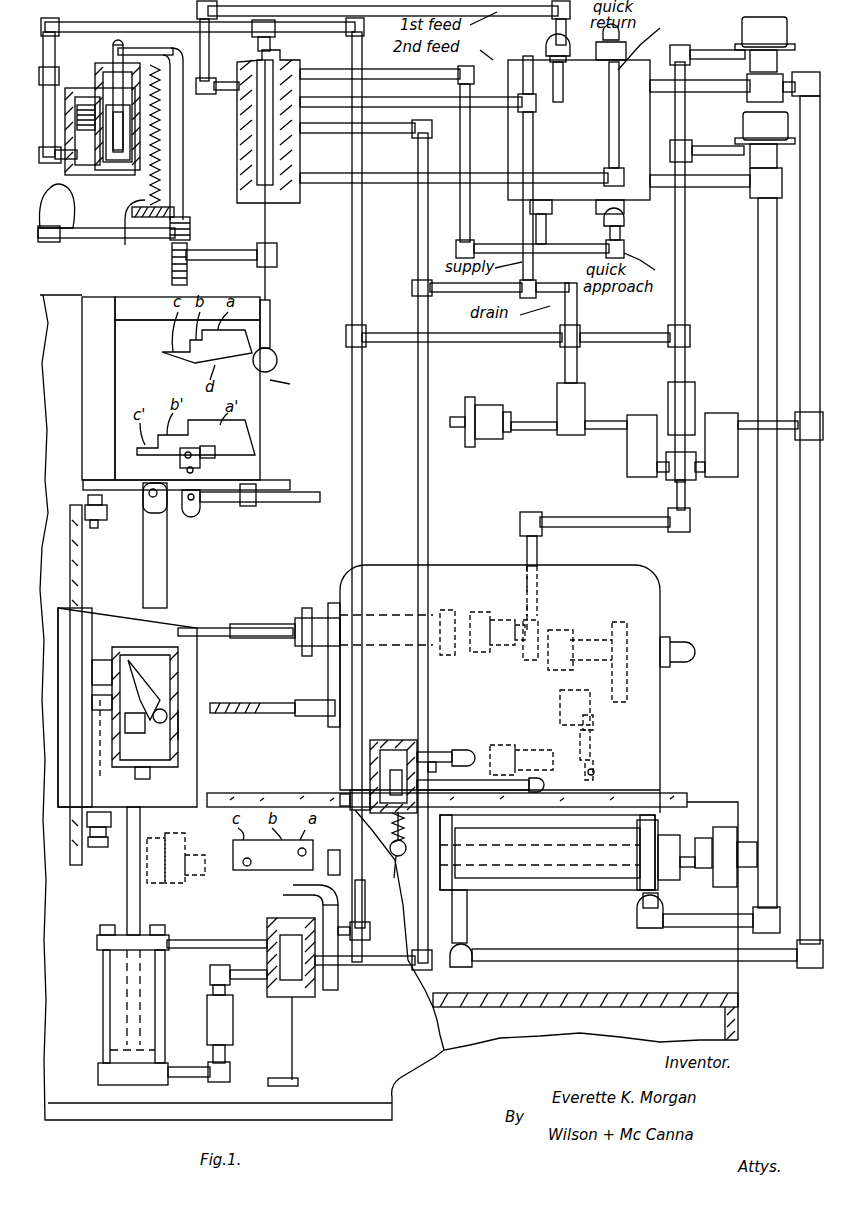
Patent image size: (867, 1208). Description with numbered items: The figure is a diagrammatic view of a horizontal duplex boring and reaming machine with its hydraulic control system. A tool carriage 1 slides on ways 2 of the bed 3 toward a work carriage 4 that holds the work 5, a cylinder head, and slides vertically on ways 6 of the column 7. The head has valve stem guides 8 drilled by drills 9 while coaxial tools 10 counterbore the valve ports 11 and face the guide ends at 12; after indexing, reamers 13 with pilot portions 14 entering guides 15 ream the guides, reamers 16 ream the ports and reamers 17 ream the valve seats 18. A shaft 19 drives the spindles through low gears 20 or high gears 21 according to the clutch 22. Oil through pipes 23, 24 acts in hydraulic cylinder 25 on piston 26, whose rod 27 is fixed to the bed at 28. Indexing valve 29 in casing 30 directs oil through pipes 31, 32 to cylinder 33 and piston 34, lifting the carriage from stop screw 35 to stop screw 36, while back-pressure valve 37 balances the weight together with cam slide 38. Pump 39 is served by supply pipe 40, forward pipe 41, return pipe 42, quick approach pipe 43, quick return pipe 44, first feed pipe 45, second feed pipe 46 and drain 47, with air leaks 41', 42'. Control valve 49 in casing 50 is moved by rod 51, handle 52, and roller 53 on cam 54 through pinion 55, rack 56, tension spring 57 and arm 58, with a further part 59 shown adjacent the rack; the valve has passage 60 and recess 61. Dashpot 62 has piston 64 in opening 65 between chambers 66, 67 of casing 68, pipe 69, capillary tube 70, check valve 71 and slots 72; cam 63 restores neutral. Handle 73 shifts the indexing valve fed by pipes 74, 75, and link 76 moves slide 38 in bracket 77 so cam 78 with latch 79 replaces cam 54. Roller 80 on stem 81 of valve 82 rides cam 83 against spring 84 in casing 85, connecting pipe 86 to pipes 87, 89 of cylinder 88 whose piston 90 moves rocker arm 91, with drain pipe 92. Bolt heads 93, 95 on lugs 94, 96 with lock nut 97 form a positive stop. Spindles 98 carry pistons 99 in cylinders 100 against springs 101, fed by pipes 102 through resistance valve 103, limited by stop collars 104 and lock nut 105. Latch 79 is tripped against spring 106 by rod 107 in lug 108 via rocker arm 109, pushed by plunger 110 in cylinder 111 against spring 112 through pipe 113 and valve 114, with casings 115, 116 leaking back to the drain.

The tool carriage 1 is at (655, 760).
The ways 2 is at (685, 792).
The bed 3 is at (740, 1000).
The work carriage 4 is at (185, 780).
The work 5 is at (180, 688).
The ways 6 is at (80, 595).
The column 7 is at (389, 707).
The valve stem guides 8 is at (135, 733).
The drills 9 is at (235, 707).
The tools 10 is at (262, 703).
The valve ports 11 is at (156, 731).
The end of valve stem guides 12 is at (130, 688).
The reamers 13 is at (245, 624).
The pilot portions 14 is at (203, 628).
The guides 15 is at (106, 744).
The reamers 16 is at (292, 618).
The reamers 17 is at (302, 656).
The valve seats 18 is at (178, 715).
The shaft 19 is at (678, 640).
The low gears 20 is at (555, 630).
The high gears 21 is at (625, 622).
The clutch 22 is at (595, 700).
The pipe 23 is at (803, 637).
The pipe 24 is at (765, 685).
The hydraulic cylinder 25 is at (540, 888).
The piston 26 is at (488, 890).
The piston rod 27 is at (683, 850).
The rod anchorage 28 is at (722, 875).
The valve 29 is at (265, 968).
The valve casing 30 is at (300, 998).
The pipe 31 is at (206, 943).
The pipe 32 is at (248, 980).
The hydraulic cylinder 33 is at (118, 1000).
The piston 34 is at (105, 1050).
The adjustable stop screw 35 is at (110, 815).
The adjustable stop screw 36 is at (98, 528).
The back-pressure valve 37 is at (210, 1012).
The cam slide 38 is at (186, 405).
The pump 39 is at (579, 134).
The supply pipe 40 is at (520, 222).
The forward pipe 41 is at (735, 494).
The air leak 41' is at (765, 44).
The return pipe 42 is at (716, 536).
The air leak 42' is at (765, 140).
The quick approach pipe 43 is at (342, 60).
The quick return pipe 44 is at (318, 185).
The first feed pipe 45 is at (548, 34).
The second feed pipe 46 is at (432, 84).
The drain 47 is at (255, 42).
The control valve 49 is at (250, 150).
The valve casing 50 is at (240, 185).
The rod 51 is at (278, 250).
The handle 52 is at (66, 240).
The roller 53 is at (277, 357).
The cam 54 is at (207, 346).
The pinion 55 is at (192, 233).
The rack 56 is at (188, 276).
The tension spring 57 is at (150, 190).
The arm 58 is at (120, 48).
The link 59 is at (125, 245).
The passage 60 is at (261, 79).
The annular cut-away 61 is at (300, 152).
The dashpot means 62 is at (105, 60).
The cam 63 is at (292, 384).
The piston 64 is at (130, 110).
The opening 65 is at (123, 120).
The chamber 66 is at (135, 62).
The chamber 67 is at (100, 165).
The casing 68 is at (130, 155).
The pipe 69 is at (72, 78).
The capillary tube 70 is at (70, 120).
The check valve 71 is at (80, 160).
The slots 72 is at (122, 165).
The handle 73 is at (295, 1075).
The pipe 74 is at (345, 985).
The pipe 75 is at (300, 905).
The link 76 is at (160, 556).
The bracket 77 is at (300, 305).
The cam 78 is at (196, 437).
The latch 79 is at (158, 458).
The roller 80 is at (395, 849).
The stem 81 is at (395, 818).
The valve 82 is at (397, 768).
The cam 83 is at (268, 868).
The compression spring 84 is at (395, 845).
The valve casing 85 is at (380, 738).
The pipe 86 is at (430, 750).
The pipe 87 is at (545, 792).
The hydraulic cylinder 88 is at (545, 750).
The pipe 89 is at (463, 750).
The piston 90 is at (515, 750).
The rocker arm 91 is at (598, 757).
The pipe 92 is at (350, 798).
The bolt head 93 is at (332, 872).
The lug 94 is at (367, 910).
The bolt head 95 is at (195, 850).
The lug 96 is at (165, 885).
The lock nut 97 is at (170, 850).
The spindles 98 is at (378, 615).
The pistons 99 is at (500, 612).
The hydraulic cylinders 100 is at (492, 652).
The compression springs 101 is at (478, 612).
The pipes 102 is at (538, 547).
The resistance valve 103 is at (730, 462).
The stop collars 104 is at (303, 600).
The lock nut 105 is at (318, 600).
The spring 106 is at (205, 462).
The rod 107 is at (290, 504).
The lug 108 is at (246, 508).
The rocker arm 109 is at (185, 508).
The plunger 110 is at (455, 435).
The hydraulic cylinder 111 is at (490, 400).
The spring 112 is at (480, 445).
The pipe 113 is at (527, 430).
The valve 114 is at (630, 462).
The casing 115 is at (690, 393).
The casing 116 is at (588, 390).